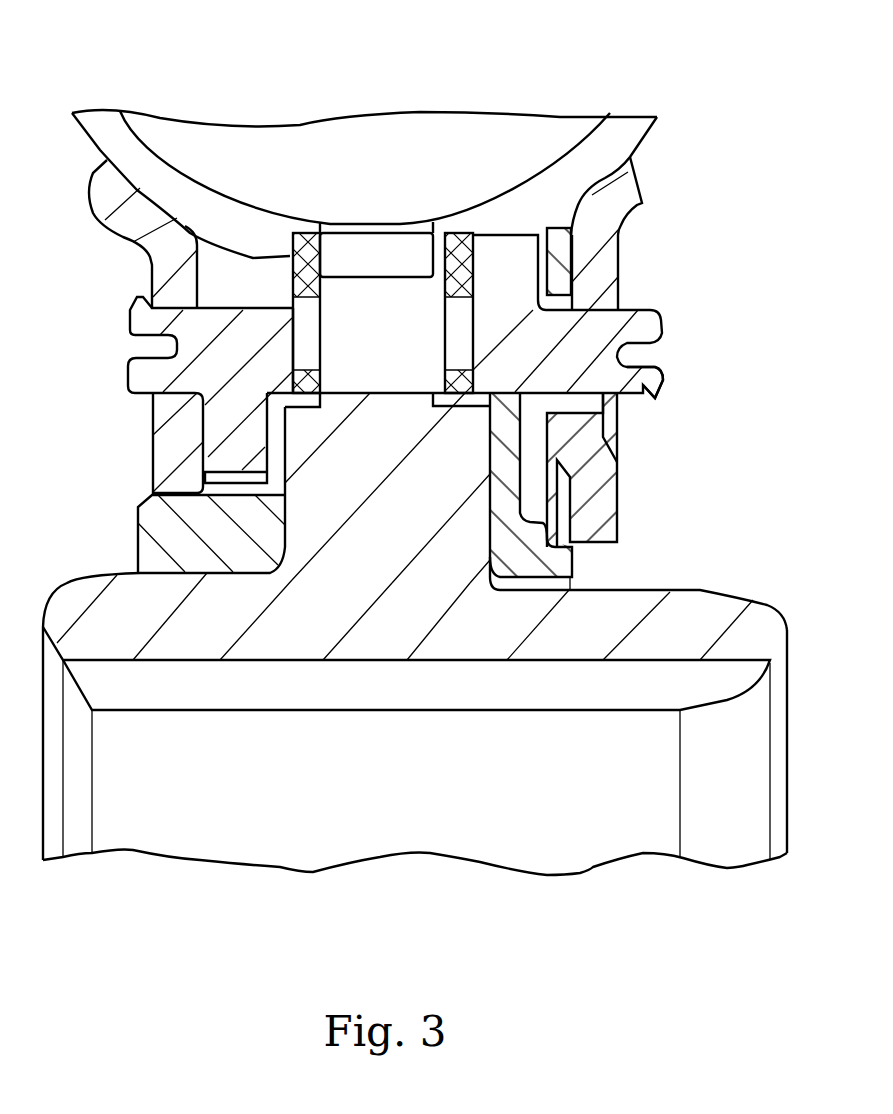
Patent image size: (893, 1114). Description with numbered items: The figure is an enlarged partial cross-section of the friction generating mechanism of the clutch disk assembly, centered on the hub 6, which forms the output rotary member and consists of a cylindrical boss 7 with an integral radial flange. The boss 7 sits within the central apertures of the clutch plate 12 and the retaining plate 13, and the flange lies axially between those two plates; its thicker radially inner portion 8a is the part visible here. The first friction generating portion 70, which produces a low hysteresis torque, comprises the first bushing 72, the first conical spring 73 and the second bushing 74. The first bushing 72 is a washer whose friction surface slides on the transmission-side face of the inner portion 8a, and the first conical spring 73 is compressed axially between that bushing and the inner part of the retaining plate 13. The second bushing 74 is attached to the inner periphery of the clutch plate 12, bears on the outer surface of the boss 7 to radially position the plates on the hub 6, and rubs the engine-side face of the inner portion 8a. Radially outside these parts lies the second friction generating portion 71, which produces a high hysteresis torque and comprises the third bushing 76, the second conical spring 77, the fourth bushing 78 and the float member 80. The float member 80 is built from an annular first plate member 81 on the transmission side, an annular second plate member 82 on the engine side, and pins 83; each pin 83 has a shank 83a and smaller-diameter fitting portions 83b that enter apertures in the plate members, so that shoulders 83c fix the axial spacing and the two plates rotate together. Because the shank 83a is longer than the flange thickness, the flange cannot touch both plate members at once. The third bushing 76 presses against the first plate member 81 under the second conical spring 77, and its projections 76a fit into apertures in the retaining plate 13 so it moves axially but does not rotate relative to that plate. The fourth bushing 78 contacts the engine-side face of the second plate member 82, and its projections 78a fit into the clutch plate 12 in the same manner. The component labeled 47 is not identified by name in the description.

The cap 47 is at (680, 172).
The clutch plate 12 is at (165, 275).
The retaining plate 13 is at (602, 298).
The second friction generating portion 71 is at (562, 245).
The second conical spring 77 is at (498, 267).
The third bushing 76 is at (493, 322).
The projections 76a is at (643, 386).
The second plate member 82 is at (297, 240).
The pin 83 is at (372, 297).
The shank 83a is at (343, 297).
The fitting portions 83b is at (307, 330).
The shoulders 83c is at (290, 263).
The float member 80 is at (395, 257).
The first plate member 81 is at (457, 323).
The fourth bushing 78 is at (220, 417).
The projections 78a is at (147, 322).
The second bushing 74 is at (208, 523).
The first conical spring 73 is at (575, 440).
The first friction generating portion 70 is at (573, 458).
The first bushing 72 is at (520, 543).
The boss 7 is at (687, 630).
The hub 6 is at (785, 607).
The radially inner portion 8a is at (377, 507).